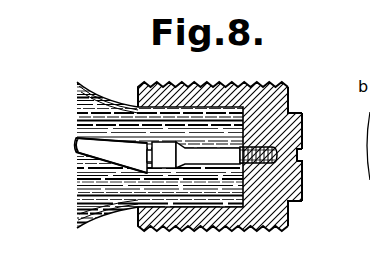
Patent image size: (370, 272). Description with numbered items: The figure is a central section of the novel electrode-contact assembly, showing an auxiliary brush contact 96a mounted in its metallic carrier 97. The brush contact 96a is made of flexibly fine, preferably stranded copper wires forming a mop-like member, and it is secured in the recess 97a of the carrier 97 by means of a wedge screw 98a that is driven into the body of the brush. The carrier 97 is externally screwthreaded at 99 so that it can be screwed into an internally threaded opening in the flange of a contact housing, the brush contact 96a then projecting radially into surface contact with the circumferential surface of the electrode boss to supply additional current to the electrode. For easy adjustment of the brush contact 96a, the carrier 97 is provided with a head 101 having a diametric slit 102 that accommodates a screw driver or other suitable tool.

The external screwthread 99 is at (243, 82).
The metallic carrier 97 is at (281, 99).
The head 101 is at (294, 126).
The diametric slit 102 is at (303, 157).
The recess 97a is at (232, 205).
The wedge screw 98a is at (199, 158).
The auxiliary brush contact 96a is at (107, 213).